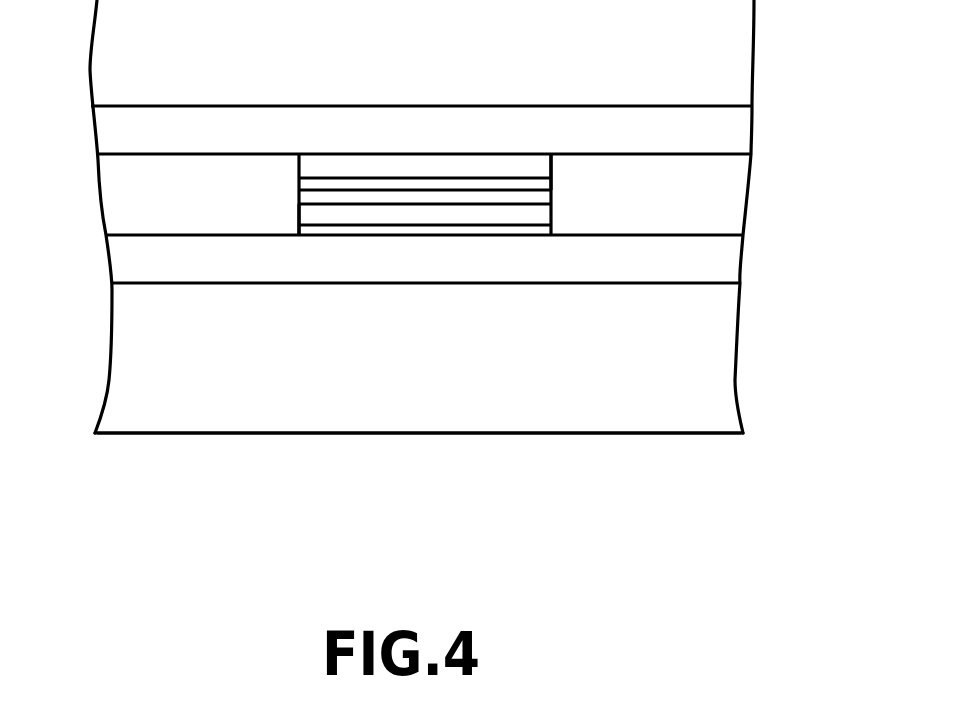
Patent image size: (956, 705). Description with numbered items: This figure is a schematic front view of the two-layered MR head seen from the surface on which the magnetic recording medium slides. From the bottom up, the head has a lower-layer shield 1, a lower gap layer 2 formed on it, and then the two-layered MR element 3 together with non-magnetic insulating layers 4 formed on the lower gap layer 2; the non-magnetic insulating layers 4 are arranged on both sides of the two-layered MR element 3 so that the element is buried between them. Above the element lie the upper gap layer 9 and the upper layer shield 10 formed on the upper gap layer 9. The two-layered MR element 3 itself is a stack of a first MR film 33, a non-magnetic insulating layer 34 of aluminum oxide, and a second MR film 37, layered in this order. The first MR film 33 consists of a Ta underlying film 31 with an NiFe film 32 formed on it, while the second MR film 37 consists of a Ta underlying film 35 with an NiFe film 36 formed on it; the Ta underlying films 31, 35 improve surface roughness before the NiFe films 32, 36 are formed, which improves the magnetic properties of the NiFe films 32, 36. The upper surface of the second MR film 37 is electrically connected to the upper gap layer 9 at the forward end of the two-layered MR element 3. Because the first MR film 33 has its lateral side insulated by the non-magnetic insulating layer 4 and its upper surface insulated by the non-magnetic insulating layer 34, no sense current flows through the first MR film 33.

The lower-layer shield 1 is at (718, 360).
The lower gap layer 2 is at (713, 262).
The two-layered MR element 3 is at (547, 537).
The non-magnetic insulating layer 4 is at (125, 210).
The upper gap layer 9 is at (712, 130).
The upper layer shield 10 is at (722, 27).
The Ta underlying film 31 is at (323, 231).
The NiFe film 32 is at (363, 217).
The first MR film 33 is at (415, 477).
The non-magnetic insulating layer 34 is at (432, 195).
The Ta underlying film 35 is at (479, 183).
The NiFe film 36 is at (528, 167).
The second MR film 37 is at (572, 477).